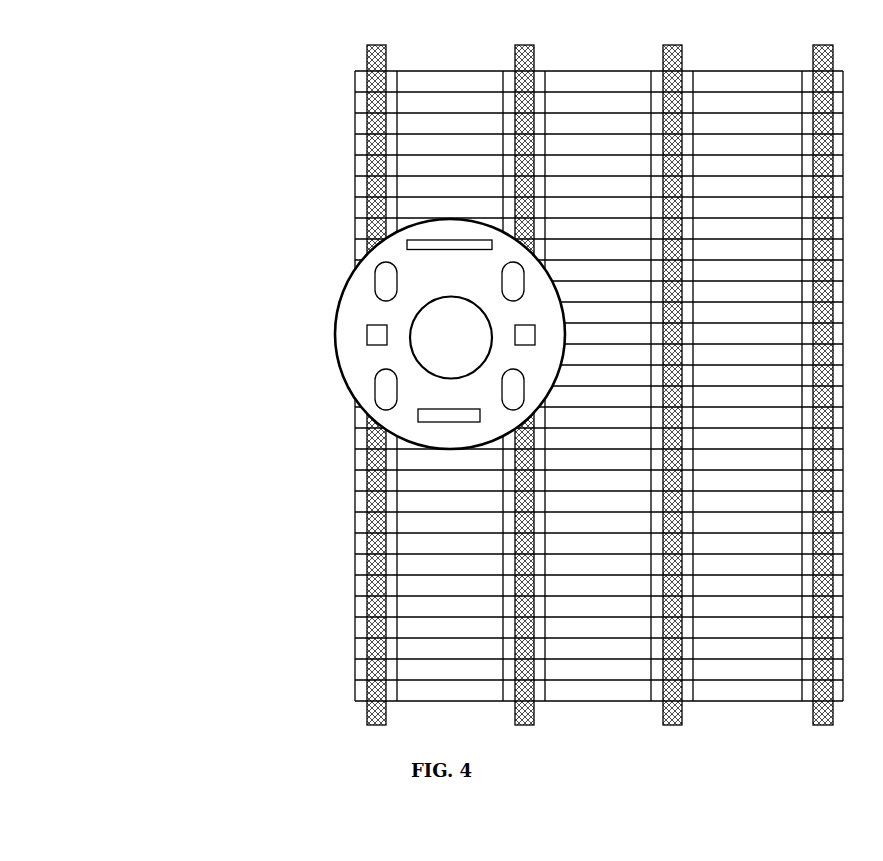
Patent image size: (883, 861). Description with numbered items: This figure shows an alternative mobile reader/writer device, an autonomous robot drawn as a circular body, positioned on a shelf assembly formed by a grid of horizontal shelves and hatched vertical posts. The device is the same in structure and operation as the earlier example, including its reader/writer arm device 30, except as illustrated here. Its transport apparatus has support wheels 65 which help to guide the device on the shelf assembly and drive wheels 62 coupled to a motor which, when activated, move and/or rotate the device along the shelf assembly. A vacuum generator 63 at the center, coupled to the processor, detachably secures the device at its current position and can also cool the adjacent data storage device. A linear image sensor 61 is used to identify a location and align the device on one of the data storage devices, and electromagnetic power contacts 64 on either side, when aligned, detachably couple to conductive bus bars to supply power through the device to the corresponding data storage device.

The linear image sensor 61 is at (402, 242).
The drive wheels 62 is at (502, 282).
The vacuum generator 63 is at (410, 318).
The electromagnetic power contacts 64 is at (514, 332).
The support wheels 65 is at (500, 390).
The reader/writer arm device 30 is at (412, 420).